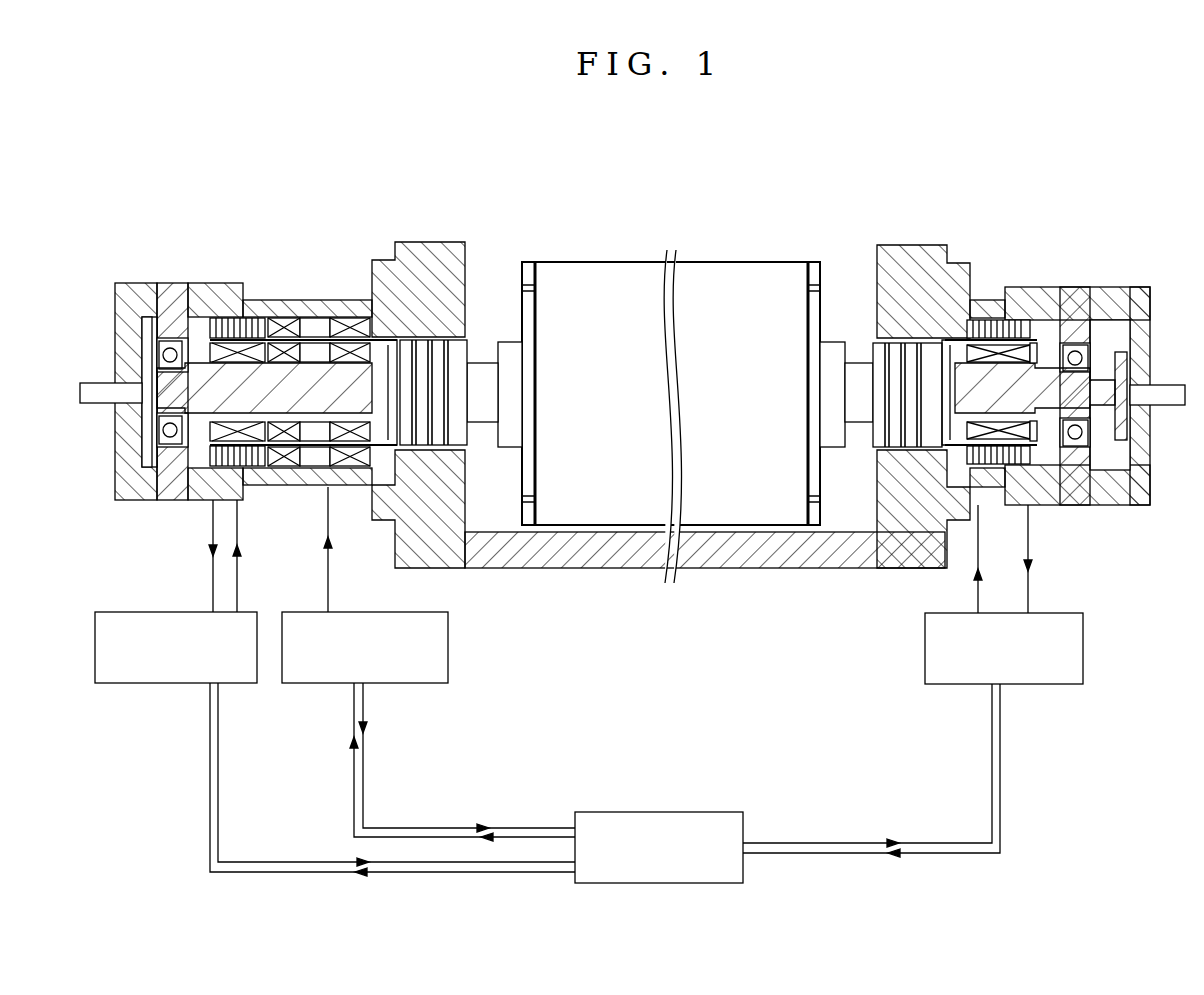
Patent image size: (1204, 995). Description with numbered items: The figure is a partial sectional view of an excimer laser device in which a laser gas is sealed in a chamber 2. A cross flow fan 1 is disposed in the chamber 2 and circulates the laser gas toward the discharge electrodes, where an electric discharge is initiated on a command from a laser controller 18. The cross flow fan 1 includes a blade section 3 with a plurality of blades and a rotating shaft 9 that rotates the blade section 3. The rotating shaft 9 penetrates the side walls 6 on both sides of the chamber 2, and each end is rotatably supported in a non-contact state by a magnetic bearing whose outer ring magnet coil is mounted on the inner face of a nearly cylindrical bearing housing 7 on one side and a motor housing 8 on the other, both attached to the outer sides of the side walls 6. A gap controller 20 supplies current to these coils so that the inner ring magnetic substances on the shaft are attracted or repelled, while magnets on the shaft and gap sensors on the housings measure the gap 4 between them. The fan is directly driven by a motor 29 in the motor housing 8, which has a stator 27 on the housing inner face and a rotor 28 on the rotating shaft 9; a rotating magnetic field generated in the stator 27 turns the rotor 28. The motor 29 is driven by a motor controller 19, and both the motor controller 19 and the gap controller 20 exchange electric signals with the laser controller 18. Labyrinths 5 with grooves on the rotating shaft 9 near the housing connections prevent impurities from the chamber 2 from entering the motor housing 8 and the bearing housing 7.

The cross flow fan 1 is at (671, 364).
The chamber 2 is at (773, 568).
The blade section 3 is at (578, 262).
The gap 4 is at (198, 500).
The labyrinth 5 is at (470, 435).
The side wall 6 is at (440, 245).
The bearing housing 7 is at (1063, 310).
The motor housing 8 is at (238, 310).
The rotating shaft 9 is at (480, 362).
The laser controller 18 is at (722, 812).
The motor controller 19 is at (448, 645).
The gap controller 20 is at (152, 683).
The stator 27 is at (345, 330).
The rotor 28 is at (318, 345).
The motor 29 is at (320, 322).